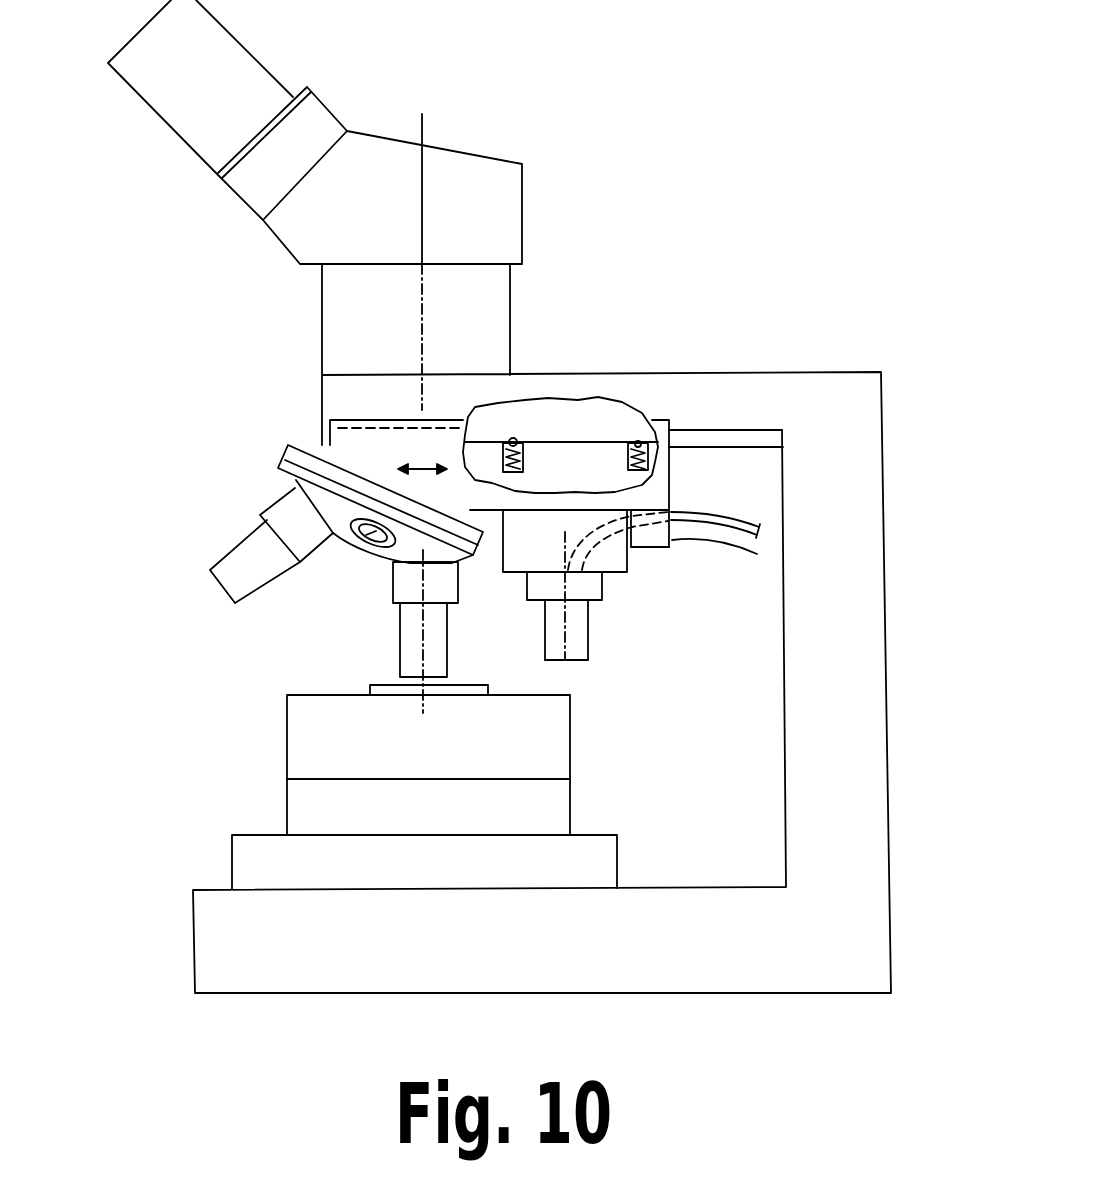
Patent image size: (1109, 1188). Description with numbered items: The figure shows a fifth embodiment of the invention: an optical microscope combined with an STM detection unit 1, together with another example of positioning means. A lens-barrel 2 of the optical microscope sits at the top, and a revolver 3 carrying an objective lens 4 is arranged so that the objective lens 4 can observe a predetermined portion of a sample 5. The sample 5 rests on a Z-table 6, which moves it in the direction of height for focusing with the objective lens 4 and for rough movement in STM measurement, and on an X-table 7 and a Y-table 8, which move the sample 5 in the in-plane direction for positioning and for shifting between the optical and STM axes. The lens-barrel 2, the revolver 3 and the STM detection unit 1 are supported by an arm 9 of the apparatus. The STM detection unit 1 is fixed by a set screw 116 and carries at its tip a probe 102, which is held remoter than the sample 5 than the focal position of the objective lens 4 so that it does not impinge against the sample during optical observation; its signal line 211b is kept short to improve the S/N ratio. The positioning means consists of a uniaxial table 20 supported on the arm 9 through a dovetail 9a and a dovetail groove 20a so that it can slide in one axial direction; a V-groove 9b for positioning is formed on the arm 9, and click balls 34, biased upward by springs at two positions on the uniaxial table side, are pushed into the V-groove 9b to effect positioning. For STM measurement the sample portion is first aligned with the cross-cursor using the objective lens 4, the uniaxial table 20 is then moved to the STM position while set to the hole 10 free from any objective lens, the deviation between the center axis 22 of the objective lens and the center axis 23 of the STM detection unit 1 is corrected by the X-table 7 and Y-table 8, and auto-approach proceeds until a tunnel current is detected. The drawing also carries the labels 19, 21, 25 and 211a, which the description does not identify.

The STM detection unit 1 is at (577, 613).
The lens-barrel 2 is at (500, 206).
The revolver 3 is at (288, 444).
The objective lens 4 is at (237, 573).
The sample 5 is at (370, 692).
The Z-table 6 is at (332, 743).
The X-table 7 is at (315, 813).
The Y-table 8 is at (257, 875).
The arm 9 is at (860, 803).
The dovetail 9a is at (686, 434).
The V-groove 9b is at (515, 437).
The hole 10 is at (290, 493).
The guide member 19 is at (661, 487).
The uniaxial table 20 is at (674, 521).
The dovetail groove 20a is at (433, 428).
The observation optical axis 21 is at (422, 136).
The center axis of the objective lens 22 is at (418, 665).
The center axis of the STM detection unit 23 is at (587, 643).
The objective holder 25 is at (512, 541).
The click balls 34 is at (628, 451).
The probe 102 is at (565, 663).
The set screw 116 is at (532, 580).
The optical fiber 211a is at (736, 521).
The signal line 211b is at (655, 550).